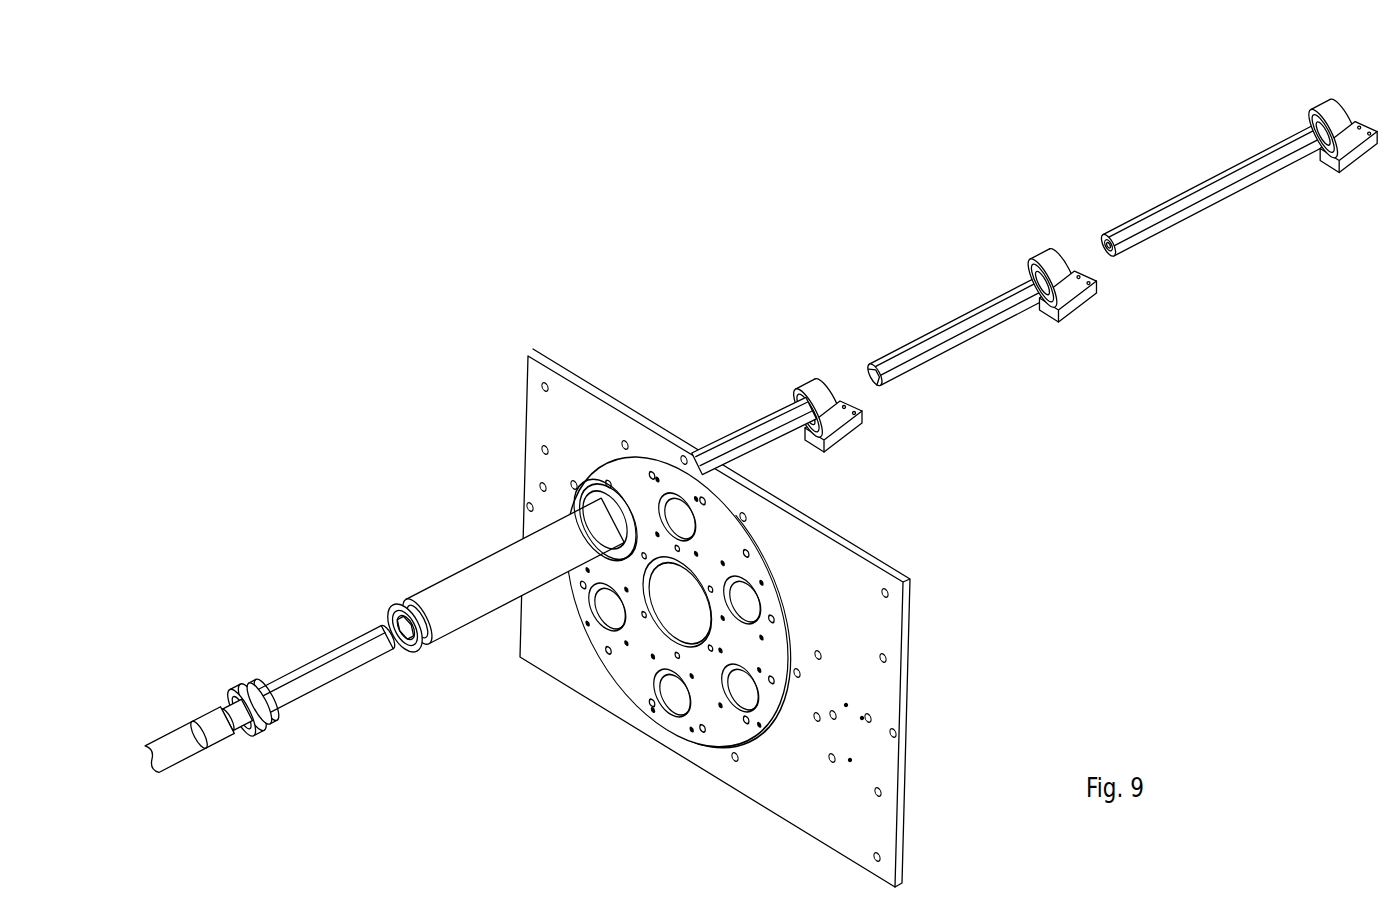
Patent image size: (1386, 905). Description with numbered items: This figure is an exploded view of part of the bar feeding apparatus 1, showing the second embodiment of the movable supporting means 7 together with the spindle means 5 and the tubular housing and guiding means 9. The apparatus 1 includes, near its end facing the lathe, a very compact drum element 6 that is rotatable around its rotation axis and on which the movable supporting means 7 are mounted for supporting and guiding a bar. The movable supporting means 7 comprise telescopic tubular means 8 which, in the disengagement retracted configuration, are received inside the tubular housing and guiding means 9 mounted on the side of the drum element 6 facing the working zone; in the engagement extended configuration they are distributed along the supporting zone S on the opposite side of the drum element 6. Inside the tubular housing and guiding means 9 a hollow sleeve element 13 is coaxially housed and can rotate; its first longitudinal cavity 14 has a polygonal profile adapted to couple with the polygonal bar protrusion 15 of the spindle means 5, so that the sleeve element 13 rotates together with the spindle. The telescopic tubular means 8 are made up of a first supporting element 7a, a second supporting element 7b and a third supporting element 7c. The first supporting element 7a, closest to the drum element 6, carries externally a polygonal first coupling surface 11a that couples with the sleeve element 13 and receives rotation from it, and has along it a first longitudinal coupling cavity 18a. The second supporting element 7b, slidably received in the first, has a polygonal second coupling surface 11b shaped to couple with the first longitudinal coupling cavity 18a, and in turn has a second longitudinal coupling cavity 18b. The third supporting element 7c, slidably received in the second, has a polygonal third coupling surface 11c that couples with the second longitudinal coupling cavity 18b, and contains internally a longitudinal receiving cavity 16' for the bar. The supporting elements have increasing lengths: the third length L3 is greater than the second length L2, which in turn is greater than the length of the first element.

The apparatus 1 is at (594, 238).
The spindle means 5 is at (186, 735).
The drum element 6 is at (713, 723).
The movable supporting means 7 is at (1177, 223).
The first supporting element 7a is at (742, 427).
The second supporting element 7b is at (1010, 313).
The third supporting element 7c is at (1234, 183).
The telescopic tubular means 8 is at (916, 342).
The tubular housing and guiding means 9 is at (458, 578).
The first coupling surface 11a is at (767, 443).
The second coupling surface 11b is at (947, 347).
The third coupling surface 11c is at (1274, 162).
The hollow sleeve element 13 is at (392, 615).
The first longitudinal cavity 14 is at (364, 624).
The polygonal bar protrusion 15 is at (313, 683).
The longitudinal receiving cavity 16' is at (1137, 294).
The first longitudinal coupling cavity 18a is at (840, 378).
The second longitudinal coupling cavity 18b is at (880, 402).
The supporting zone S is at (1092, 458).
The second length L2 is at (1050, 250).
The third length L3 is at (1333, 103).